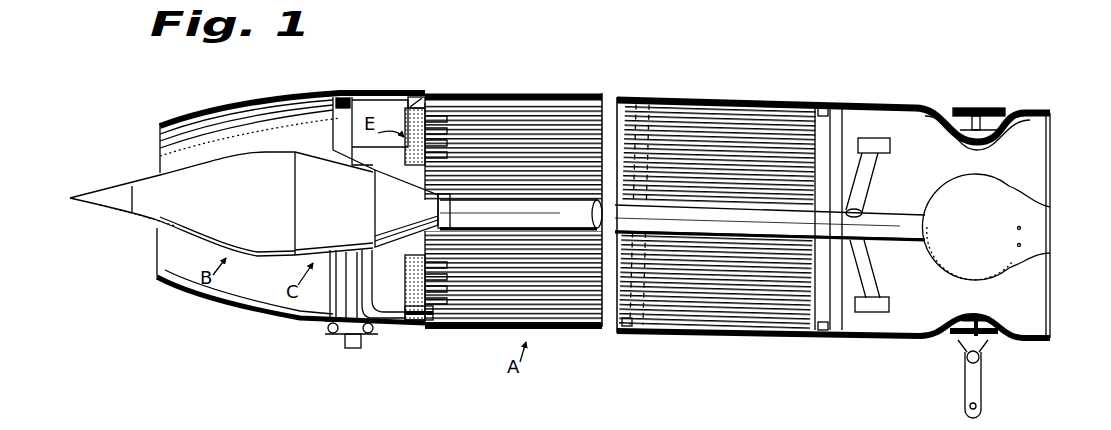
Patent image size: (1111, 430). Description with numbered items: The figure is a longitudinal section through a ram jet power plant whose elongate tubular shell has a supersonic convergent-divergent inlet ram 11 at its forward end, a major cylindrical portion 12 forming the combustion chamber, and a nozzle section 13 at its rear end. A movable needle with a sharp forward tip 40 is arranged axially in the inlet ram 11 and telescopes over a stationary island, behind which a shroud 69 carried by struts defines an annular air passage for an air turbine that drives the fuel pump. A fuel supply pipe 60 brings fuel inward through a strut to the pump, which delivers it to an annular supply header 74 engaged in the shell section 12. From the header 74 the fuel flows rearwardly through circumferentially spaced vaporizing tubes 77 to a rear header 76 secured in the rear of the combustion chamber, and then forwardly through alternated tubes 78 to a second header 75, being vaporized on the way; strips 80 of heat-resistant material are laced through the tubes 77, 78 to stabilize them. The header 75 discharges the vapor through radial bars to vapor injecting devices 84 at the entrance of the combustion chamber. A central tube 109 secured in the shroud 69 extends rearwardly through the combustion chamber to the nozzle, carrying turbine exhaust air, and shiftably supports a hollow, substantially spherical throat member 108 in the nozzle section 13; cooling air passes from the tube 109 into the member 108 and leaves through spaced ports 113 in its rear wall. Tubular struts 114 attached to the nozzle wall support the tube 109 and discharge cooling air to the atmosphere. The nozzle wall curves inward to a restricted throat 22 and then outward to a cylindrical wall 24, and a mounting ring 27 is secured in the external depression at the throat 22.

The inlet ram 11 is at (282, 95).
The cylindrical portion of the shell 12 is at (668, 97).
The nozzle section 13 is at (1026, 112).
The restricted throat 22 is at (968, 320).
The cylindrical wall 24 is at (1036, 338).
The mounting ring 27 is at (968, 347).
The forward tip 40 is at (106, 212).
The fuel supply pipe 60 is at (361, 336).
The shroud 69 is at (414, 219).
The supply header 74 is at (416, 97).
The second annular header 75 is at (420, 322).
The rear header 76 is at (818, 333).
The vaporizing tubes 77 is at (482, 323).
The vaporizing tubes 78 is at (505, 101).
The heat resistant strips 80 is at (637, 327).
The vapor injecting devices 84 is at (432, 116).
The throat member 108 is at (960, 196).
The central tube 109 is at (888, 217).
The ports 113 is at (1020, 210).
The struts 114 is at (879, 278).